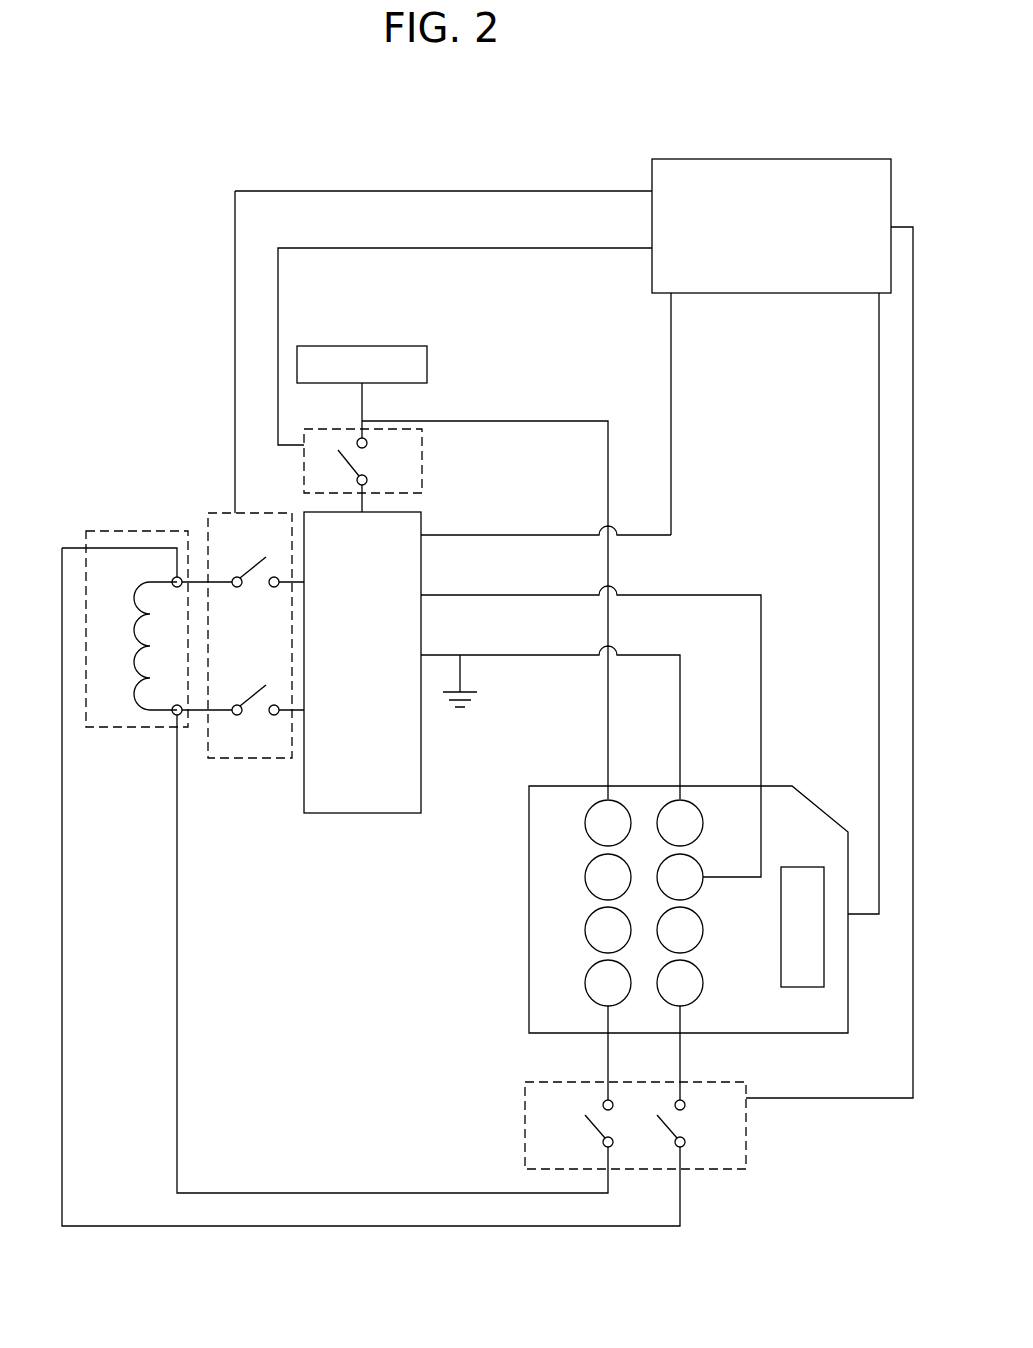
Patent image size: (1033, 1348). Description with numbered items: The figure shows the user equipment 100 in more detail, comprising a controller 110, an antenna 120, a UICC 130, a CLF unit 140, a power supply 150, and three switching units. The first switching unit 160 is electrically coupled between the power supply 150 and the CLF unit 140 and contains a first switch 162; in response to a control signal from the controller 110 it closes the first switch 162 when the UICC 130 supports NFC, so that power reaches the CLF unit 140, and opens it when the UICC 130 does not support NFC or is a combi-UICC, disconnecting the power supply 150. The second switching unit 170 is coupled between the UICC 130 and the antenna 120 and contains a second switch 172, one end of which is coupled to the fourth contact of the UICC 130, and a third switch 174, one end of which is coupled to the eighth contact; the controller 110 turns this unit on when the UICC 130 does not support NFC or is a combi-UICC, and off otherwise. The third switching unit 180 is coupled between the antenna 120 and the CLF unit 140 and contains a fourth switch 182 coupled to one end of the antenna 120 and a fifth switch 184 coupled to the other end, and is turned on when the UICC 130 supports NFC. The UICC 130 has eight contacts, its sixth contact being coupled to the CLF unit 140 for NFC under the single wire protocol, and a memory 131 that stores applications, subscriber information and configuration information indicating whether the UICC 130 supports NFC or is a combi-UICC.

The user equipment 100 is at (112, 165).
The controller 110 is at (868, 159).
The antenna 120 is at (120, 727).
The UICC 130 is at (702, 903).
The memory 131 is at (803, 867).
The CLF unit 140 is at (362, 813).
The power supply 150 is at (427, 365).
The first switching unit 160 is at (371, 461).
The first switch 162 is at (340, 456).
The second switching unit 170 is at (669, 1182).
The second switch 172 is at (590, 1130).
The third switch 174 is at (662, 1130).
The third switching unit 180 is at (250, 661).
The fourth switch 182 is at (256, 566).
The fifth switch 184 is at (256, 694).